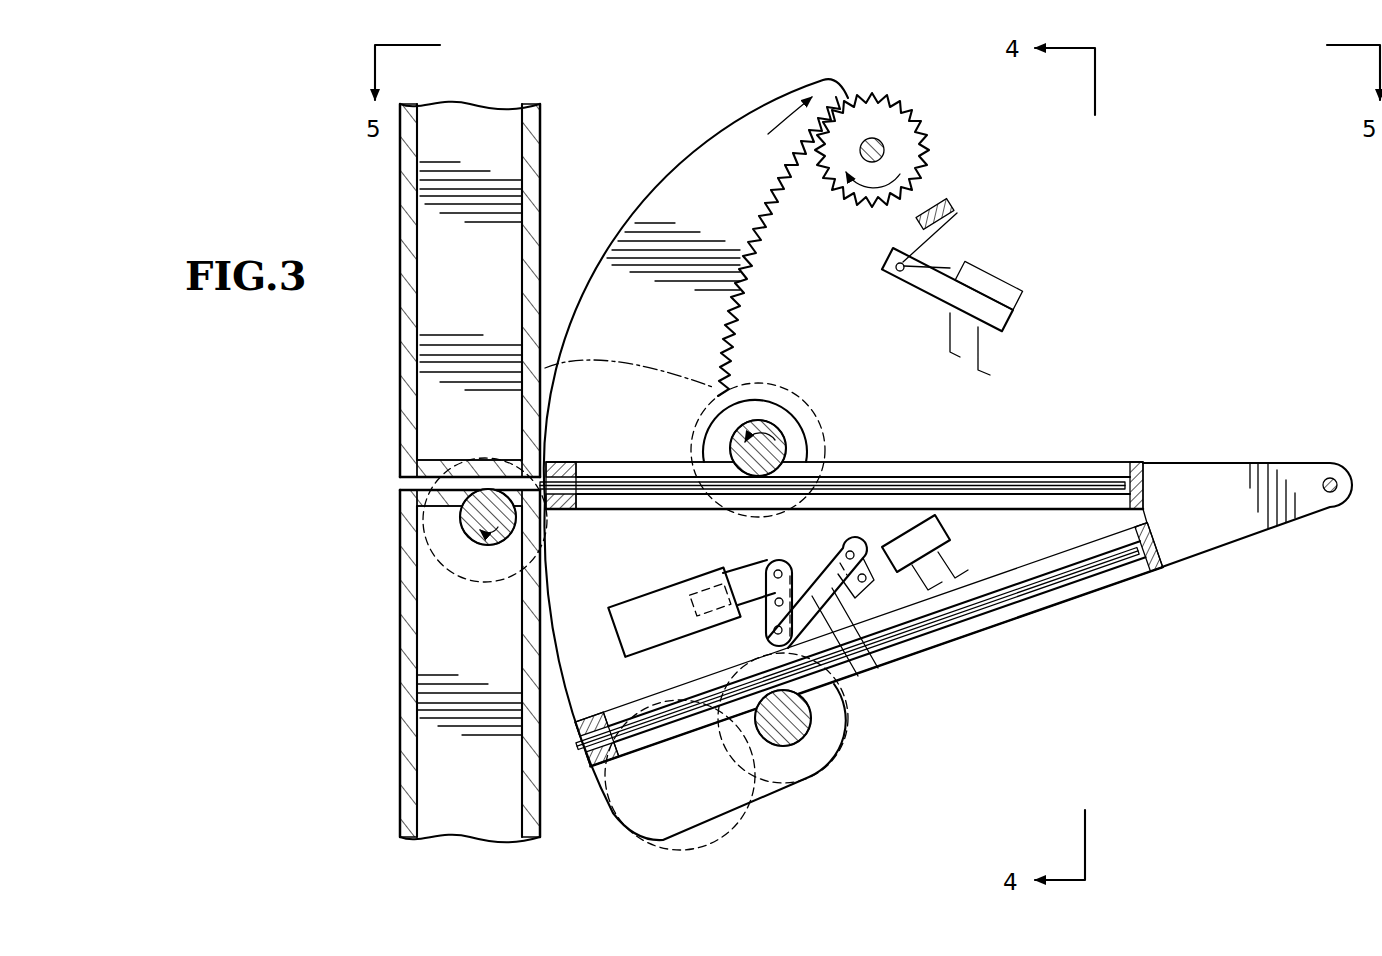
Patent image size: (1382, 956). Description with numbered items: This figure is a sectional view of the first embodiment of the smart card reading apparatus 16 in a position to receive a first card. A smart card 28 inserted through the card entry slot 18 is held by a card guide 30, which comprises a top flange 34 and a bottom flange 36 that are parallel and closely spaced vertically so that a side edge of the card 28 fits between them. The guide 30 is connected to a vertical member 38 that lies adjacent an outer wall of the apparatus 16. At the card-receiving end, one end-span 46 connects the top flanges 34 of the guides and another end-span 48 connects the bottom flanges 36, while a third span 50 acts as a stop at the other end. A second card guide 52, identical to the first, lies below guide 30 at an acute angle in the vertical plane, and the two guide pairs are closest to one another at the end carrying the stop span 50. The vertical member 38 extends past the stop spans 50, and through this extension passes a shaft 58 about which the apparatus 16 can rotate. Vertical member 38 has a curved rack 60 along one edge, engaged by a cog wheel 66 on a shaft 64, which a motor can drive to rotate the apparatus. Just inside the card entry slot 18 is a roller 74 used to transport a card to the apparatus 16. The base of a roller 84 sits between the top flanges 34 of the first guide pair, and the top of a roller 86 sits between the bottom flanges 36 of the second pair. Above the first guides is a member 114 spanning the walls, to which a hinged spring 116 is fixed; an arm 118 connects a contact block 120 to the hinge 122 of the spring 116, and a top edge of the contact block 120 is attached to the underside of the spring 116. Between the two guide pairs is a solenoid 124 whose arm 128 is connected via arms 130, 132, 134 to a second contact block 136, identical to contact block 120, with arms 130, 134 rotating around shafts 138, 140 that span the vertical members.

The smart card reading apparatus 16 is at (1157, 312).
The card entry slot 18 is at (398, 482).
The smart card 28 is at (1070, 481).
The card guide 30 is at (891, 457).
The top flange 34 is at (1006, 467).
The bottom flange 36 is at (1033, 500).
The vertical member 38 is at (656, 212).
The end-span 46 is at (562, 460).
The end-span 48 is at (562, 510).
The stop span 50 is at (1150, 532).
The card guide 52 is at (1005, 633).
The shaft 58 is at (1332, 478).
The curved rack 60 is at (746, 290).
The shaft 64 is at (874, 139).
The cog wheel 66 is at (928, 132).
The roller 74 is at (486, 546).
The roller 84 is at (786, 440).
The roller 86 is at (802, 735).
The member 114 is at (951, 208).
The hinged spring 116 is at (946, 266).
The arm 118 is at (916, 290).
The contact block 120 is at (1005, 292).
The hinge 122 is at (896, 266).
The solenoid 124 is at (652, 604).
The solenoid arm 128 is at (748, 580).
The arm 130 is at (770, 616).
The arm 132 is at (836, 646).
The arm 134 is at (872, 552).
The contact block 136 is at (985, 535).
The shaft 138 is at (806, 578).
The shaft 140 is at (866, 583).